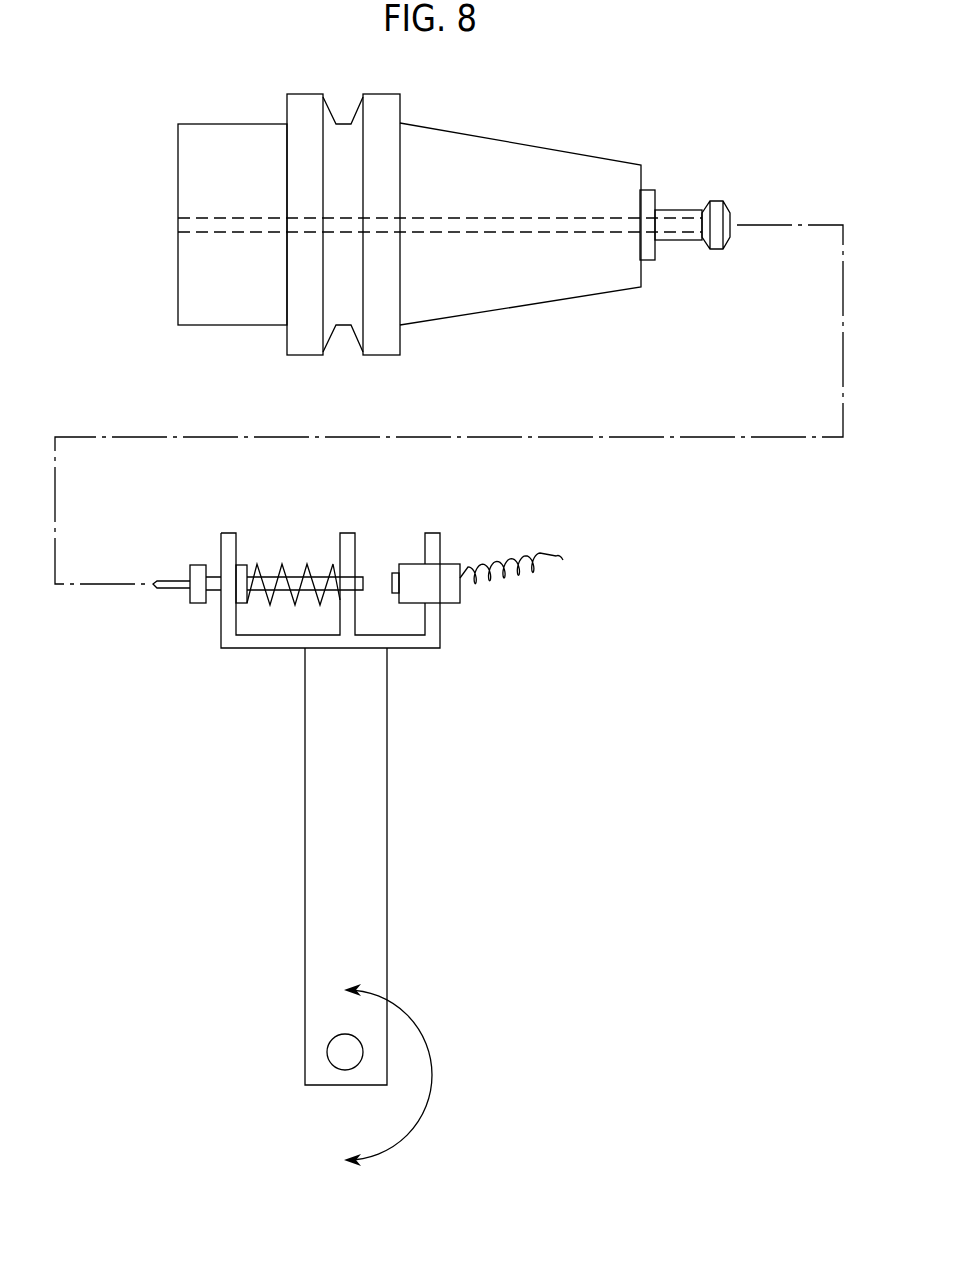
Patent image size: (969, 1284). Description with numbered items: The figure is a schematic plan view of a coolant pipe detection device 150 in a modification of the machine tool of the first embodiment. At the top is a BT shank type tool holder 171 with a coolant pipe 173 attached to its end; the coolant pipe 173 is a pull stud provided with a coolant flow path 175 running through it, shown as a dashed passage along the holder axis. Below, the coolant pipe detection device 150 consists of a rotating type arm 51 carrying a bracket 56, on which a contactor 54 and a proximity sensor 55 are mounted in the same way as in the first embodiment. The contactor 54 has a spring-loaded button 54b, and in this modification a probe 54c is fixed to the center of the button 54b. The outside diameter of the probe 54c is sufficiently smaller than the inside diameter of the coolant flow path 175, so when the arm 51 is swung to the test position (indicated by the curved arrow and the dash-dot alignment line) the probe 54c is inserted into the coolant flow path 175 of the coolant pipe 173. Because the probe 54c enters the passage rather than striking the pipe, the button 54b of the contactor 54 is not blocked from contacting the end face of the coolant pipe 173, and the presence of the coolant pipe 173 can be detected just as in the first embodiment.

The BT shank type tool holder 171 is at (481, 139).
The coolant pipe 173 is at (680, 210).
The coolant flow path 175 is at (570, 228).
The contactor 54 is at (267, 572).
The button 54b is at (197, 605).
The probe 54c is at (162, 588).
The proximity sensor 55 is at (455, 563).
The bracket 56 is at (433, 635).
The coolant pipe detection device 150 is at (412, 776).
The rotating type arm 51 is at (370, 878).